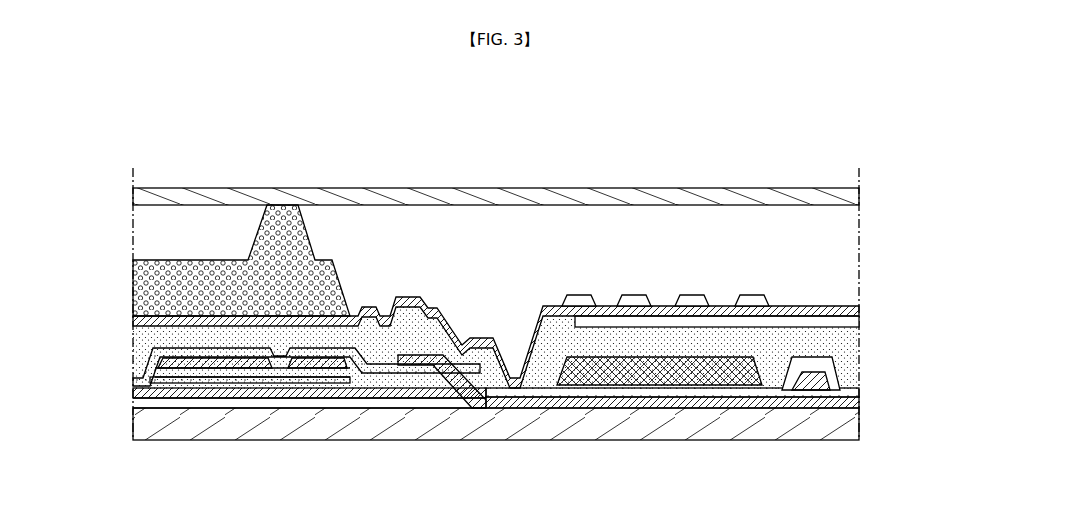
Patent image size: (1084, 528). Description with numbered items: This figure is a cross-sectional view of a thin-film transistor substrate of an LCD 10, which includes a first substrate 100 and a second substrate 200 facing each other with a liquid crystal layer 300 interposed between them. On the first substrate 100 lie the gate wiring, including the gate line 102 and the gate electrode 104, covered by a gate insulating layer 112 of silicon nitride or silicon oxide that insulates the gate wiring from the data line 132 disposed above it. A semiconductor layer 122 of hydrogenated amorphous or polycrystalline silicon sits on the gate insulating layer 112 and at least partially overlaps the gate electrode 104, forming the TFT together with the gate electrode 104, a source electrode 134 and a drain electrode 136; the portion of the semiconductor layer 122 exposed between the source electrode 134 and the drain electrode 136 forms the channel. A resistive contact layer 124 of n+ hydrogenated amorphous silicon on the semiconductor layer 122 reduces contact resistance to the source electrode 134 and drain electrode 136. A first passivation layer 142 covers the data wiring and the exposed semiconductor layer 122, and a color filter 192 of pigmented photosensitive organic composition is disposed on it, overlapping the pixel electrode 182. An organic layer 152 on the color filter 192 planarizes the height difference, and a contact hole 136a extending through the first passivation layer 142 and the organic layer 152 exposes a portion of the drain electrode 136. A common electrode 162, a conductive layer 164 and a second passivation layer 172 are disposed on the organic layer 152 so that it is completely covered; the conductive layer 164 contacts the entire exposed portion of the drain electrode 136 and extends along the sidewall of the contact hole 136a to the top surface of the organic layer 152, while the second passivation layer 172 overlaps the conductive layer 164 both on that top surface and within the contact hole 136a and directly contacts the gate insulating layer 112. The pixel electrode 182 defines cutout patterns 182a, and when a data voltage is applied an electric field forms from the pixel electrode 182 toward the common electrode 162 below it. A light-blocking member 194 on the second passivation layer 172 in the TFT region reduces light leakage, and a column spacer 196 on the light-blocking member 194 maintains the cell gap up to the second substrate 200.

The LCD 10 is at (546, 150).
The first substrate 100 is at (140, 426).
The gate line 102 is at (175, 403).
The gate electrode 104 is at (280, 403).
The gate insulating layer 112 is at (136, 391).
The semiconductor layer 122 is at (295, 384).
The resistive contact layer 124 is at (313, 373).
The data line 132 is at (828, 365).
The source electrode 134 is at (220, 364).
The drain electrode 136 is at (342, 374).
The contact hole 136a is at (489, 308).
The first passivation layer 142 is at (136, 378).
The organic layer 152 is at (136, 350).
The common electrode 162 is at (857, 322).
The conductive layer 164 is at (465, 359).
The second passivation layer 172 is at (136, 320).
The pixel electrode 182 is at (512, 381).
The cutout patterns 182a is at (720, 301).
The color filter 192 is at (672, 376).
The light-blocking member 194 is at (136, 292).
The column spacer 196 is at (290, 213).
The second substrate 200 is at (136, 200).
The liquid crystal layer 300 is at (855, 248).